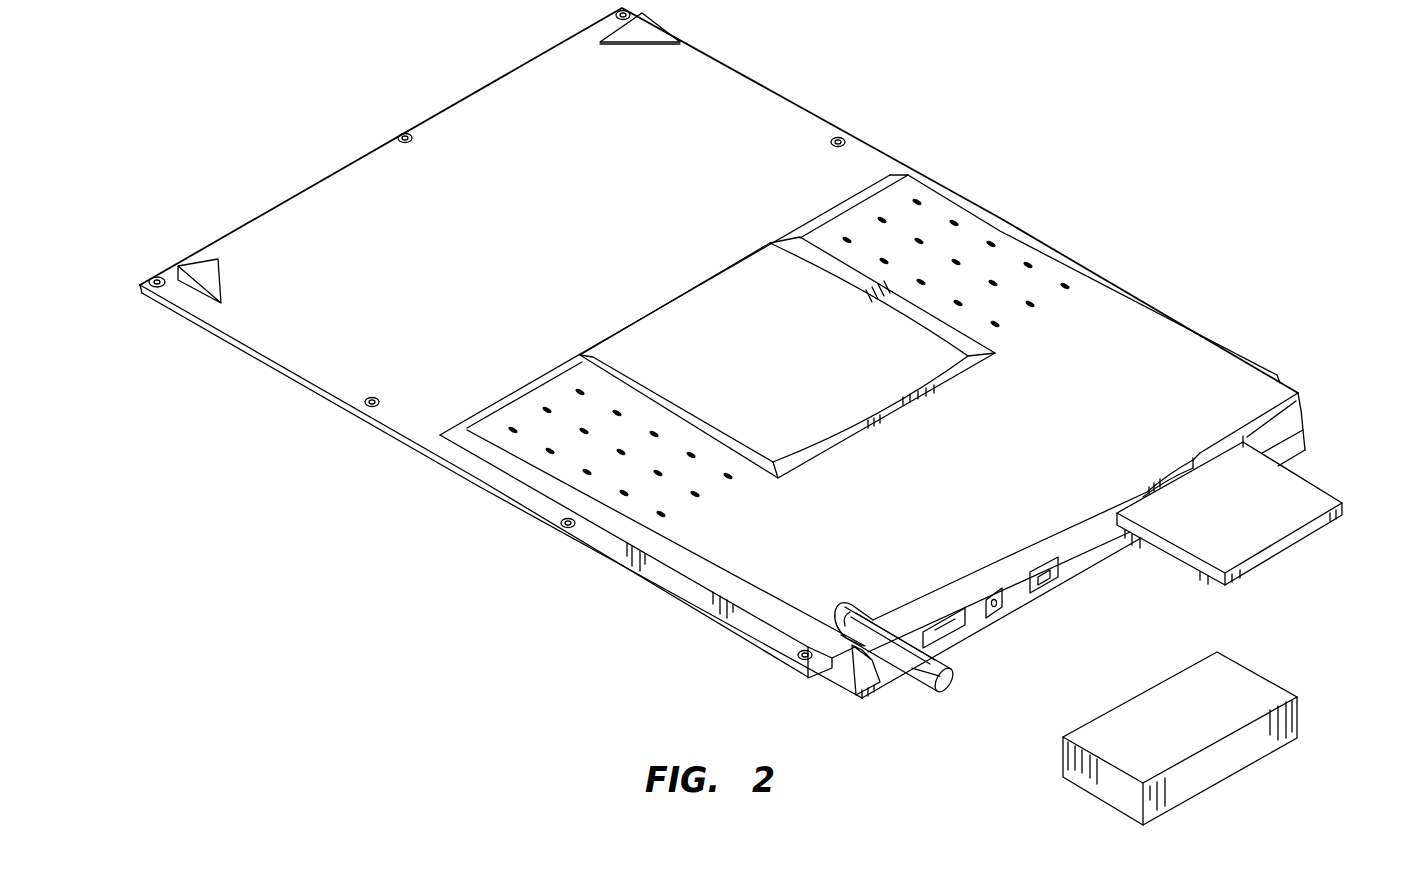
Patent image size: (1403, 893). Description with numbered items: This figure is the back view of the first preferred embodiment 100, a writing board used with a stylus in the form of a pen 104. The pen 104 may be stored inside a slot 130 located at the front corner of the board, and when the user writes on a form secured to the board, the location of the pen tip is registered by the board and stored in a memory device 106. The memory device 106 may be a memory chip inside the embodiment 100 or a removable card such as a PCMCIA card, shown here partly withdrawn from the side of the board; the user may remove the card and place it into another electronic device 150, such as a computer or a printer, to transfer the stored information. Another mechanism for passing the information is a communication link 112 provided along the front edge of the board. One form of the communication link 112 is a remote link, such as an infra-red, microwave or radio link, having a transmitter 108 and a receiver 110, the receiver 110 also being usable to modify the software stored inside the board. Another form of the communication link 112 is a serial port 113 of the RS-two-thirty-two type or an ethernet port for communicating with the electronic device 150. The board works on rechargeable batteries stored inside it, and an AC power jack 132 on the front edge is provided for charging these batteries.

The first preferred embodiment 100 is at (1012, 152).
The pen 104 is at (920, 673).
The memory device 106 is at (1283, 497).
The transmitter 108 is at (958, 581).
The receiver 110 is at (952, 620).
The communication link 112 is at (990, 556).
The RS-232 serial port 113 is at (1048, 565).
The slot 130 is at (873, 617).
The AC power jack 132 is at (1004, 614).
The electronic device 150 is at (983, 657).